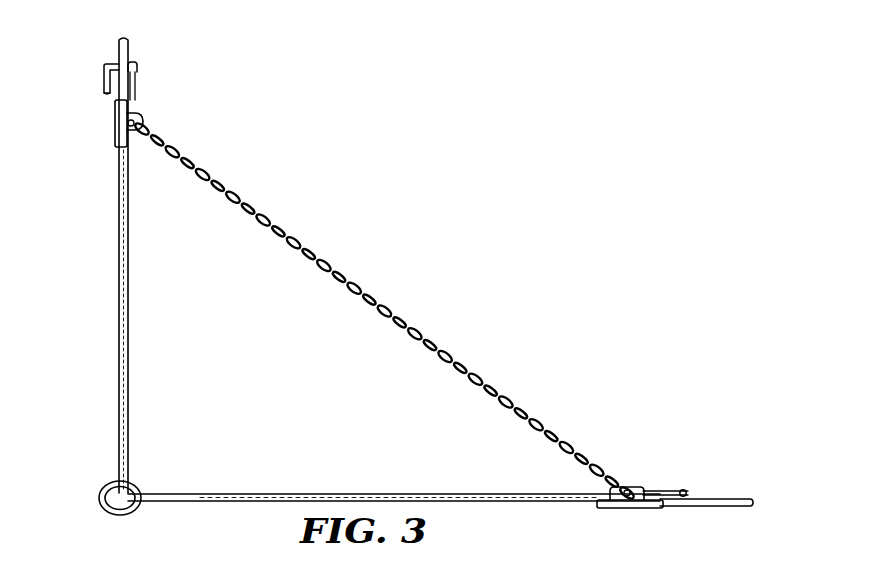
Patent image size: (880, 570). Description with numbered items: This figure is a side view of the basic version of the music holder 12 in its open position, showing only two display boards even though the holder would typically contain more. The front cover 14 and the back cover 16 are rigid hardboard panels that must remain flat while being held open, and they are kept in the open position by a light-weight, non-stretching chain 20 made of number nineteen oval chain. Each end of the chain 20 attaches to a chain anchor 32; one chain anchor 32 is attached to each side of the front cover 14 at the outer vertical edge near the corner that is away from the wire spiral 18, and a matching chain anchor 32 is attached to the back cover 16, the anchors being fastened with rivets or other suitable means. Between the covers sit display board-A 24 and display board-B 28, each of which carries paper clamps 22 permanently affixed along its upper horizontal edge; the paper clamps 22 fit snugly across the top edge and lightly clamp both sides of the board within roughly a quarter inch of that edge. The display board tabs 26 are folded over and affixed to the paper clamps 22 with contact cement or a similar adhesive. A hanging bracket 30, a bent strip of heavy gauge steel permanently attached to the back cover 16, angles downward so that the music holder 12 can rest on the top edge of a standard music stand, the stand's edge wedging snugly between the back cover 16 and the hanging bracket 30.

The music holder 12 is at (427, 220).
The front cover 14 is at (754, 503).
The back cover 16 is at (118, 52).
The wire spiral 18 is at (101, 503).
The chain 20 is at (244, 201).
The paper clamp 22 is at (138, 75).
The display board-A 24 is at (555, 494).
The display board tab 26 is at (133, 62).
The display board-B 28 is at (130, 182).
The hanging bracket 30 is at (104, 82).
The chain anchor 32 is at (115, 126).